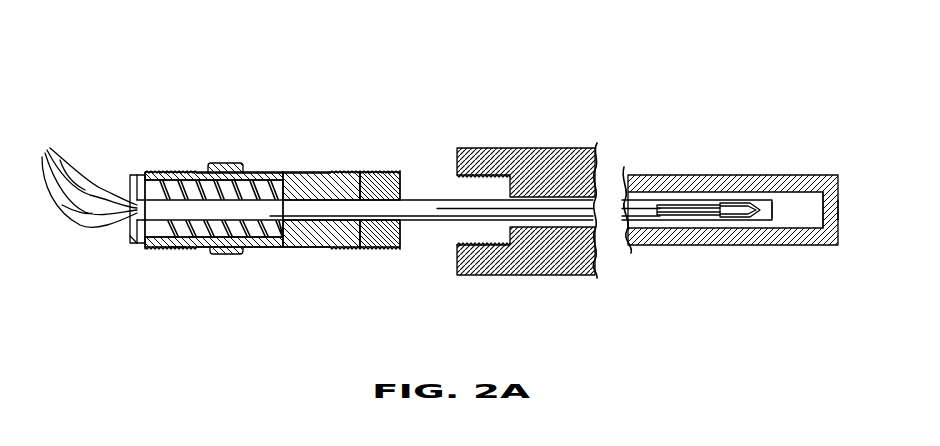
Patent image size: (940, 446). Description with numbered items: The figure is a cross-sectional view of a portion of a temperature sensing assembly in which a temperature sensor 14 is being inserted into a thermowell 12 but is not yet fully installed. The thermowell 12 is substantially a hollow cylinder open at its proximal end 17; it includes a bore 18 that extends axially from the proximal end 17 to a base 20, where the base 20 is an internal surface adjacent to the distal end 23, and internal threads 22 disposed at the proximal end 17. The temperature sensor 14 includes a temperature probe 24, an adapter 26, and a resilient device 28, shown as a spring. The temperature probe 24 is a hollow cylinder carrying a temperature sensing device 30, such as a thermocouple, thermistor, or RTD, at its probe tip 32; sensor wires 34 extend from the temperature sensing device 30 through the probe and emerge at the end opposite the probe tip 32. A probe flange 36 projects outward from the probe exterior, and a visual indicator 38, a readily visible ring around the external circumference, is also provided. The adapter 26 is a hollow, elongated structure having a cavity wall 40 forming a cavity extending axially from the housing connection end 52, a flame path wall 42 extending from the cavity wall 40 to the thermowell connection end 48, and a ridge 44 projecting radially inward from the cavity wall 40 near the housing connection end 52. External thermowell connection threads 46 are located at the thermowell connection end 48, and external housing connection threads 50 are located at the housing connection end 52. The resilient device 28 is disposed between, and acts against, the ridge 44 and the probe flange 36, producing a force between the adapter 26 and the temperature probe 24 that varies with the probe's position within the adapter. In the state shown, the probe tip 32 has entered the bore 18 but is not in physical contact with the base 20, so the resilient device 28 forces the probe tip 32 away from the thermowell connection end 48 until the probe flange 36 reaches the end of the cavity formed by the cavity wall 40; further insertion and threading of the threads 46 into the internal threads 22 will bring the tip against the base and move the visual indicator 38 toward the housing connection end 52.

The thermowell 12 is at (576, 146).
The temperature sensor 14 is at (309, 170).
The proximal end 17 is at (457, 149).
The bore 18 is at (795, 224).
The base 20 is at (821, 202).
The internal threads 22 is at (460, 238).
The distal end 23 is at (840, 218).
The temperature probe 24 is at (430, 196).
The adapter 26 is at (251, 163).
The resilient device 28 is at (197, 176).
The temperature sensing device 30 is at (732, 209).
The probe tip 32 is at (770, 210).
The sensor wires 34 is at (48, 151).
The probe flange 36 is at (275, 244).
The visual indicator 38 is at (178, 248).
The cavity wall 40 is at (212, 254).
The flame path wall 42 is at (350, 172).
The ridge 44 is at (141, 174).
The external thermowell connection threads 46 is at (365, 249).
The thermowell connection end 48 is at (399, 249).
The external housing connection threads 50 is at (147, 248).
The housing connection end 52 is at (131, 243).